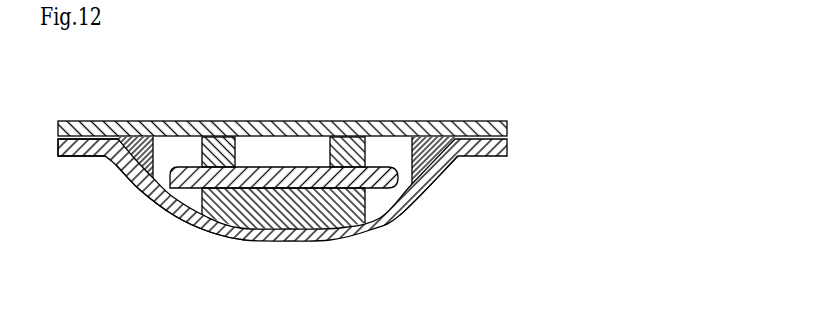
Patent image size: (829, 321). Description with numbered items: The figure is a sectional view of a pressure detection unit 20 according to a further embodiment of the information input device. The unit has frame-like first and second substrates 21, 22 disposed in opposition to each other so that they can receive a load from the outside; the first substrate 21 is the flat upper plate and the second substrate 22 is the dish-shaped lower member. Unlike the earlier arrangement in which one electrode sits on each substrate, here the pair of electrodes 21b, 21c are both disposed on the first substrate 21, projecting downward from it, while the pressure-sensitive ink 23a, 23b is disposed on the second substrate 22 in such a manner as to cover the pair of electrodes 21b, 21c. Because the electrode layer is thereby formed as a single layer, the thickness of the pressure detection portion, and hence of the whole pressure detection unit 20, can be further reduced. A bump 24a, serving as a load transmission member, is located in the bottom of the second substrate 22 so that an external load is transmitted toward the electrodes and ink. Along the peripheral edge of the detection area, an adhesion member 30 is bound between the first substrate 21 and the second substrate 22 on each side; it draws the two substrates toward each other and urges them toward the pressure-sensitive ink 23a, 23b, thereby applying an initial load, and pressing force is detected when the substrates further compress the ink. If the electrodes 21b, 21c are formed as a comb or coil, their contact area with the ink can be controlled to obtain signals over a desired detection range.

The pressure detection unit 20 is at (447, 202).
The first substrate 21 is at (281, 121).
The electrode 21b is at (216, 138).
The electrode 21c is at (350, 137).
The second substrate 22 is at (257, 228).
The upper pressure-sensitive ink 23a is at (175, 140).
The lower pressure-sensitive ink 23b is at (174, 210).
The bump 24a is at (301, 228).
The adhesion member 30 is at (437, 137).